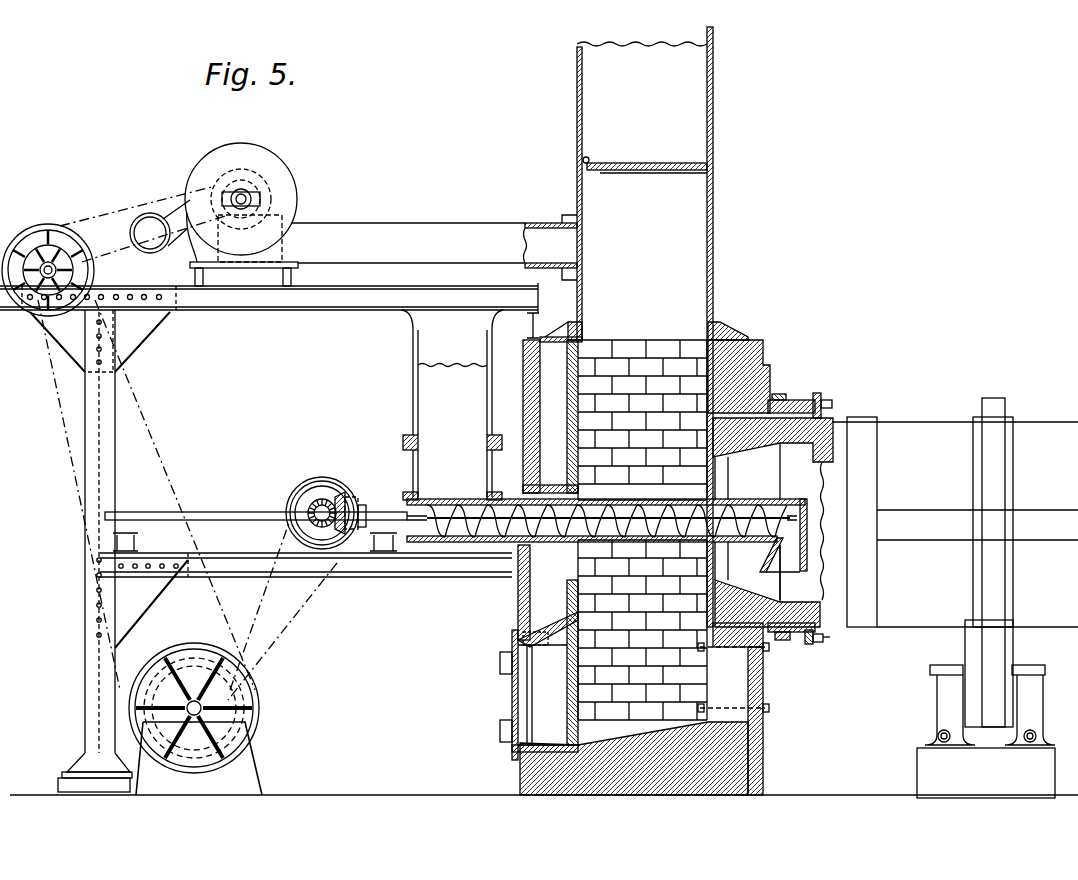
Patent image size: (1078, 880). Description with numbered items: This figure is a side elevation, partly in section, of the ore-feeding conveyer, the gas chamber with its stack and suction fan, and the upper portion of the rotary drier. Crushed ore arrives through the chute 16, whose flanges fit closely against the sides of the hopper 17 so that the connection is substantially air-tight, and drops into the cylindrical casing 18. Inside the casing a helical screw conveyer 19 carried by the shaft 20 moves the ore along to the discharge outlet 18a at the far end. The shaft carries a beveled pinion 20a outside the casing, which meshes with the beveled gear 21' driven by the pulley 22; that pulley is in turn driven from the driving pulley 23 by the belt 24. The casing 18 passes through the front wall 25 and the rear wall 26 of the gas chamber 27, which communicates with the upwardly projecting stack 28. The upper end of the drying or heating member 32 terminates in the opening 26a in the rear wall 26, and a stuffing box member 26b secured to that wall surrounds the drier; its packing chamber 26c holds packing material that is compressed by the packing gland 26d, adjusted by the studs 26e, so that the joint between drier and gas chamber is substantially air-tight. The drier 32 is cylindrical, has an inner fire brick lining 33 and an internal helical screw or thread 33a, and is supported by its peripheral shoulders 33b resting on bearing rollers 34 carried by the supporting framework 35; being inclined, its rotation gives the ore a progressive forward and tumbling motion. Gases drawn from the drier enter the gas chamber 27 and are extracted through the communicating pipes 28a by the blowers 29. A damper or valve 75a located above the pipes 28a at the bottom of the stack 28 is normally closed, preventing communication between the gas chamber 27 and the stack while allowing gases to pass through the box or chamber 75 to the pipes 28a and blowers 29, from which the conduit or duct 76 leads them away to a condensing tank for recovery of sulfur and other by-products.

The chute 16 is at (452, 372).
The hopper 17 is at (452, 475).
The cylindrical casing 18 is at (476, 548).
The discharge outlet 18a is at (788, 569).
The helical screw conveyer 19 is at (545, 548).
The shaft 20 is at (600, 563).
The beveled pinion 20a is at (403, 442).
The beveled gear 21' is at (319, 467).
The pulley 22 is at (305, 488).
The driving pulley 23 is at (240, 692).
The belt 24 is at (290, 633).
The front wall 25 is at (525, 403).
The rear wall 26 is at (775, 372).
The opening 26a is at (770, 400).
The stuffing box member 26b is at (768, 678).
The packing chamber 26c is at (790, 642).
The packing gland 26d is at (815, 645).
The studs 26e is at (830, 638).
The gas chamber 27 is at (718, 325).
The stack 28 is at (715, 112).
The communicating pipes 28a is at (533, 223).
The blowers 29 is at (250, 143).
The drying or heating member 32 is at (922, 417).
The inner fire brick lining 33 is at (822, 395).
The helical screw or thread 33a is at (815, 462).
The peripheral shoulders 33b is at (998, 420).
The bearing rollers 34 is at (1000, 655).
The supporting framework 35 is at (948, 693).
The box or chamber 75 is at (642, 397).
The damper or valve 75a is at (715, 152).
The conduit or duct 76 is at (150, 237).